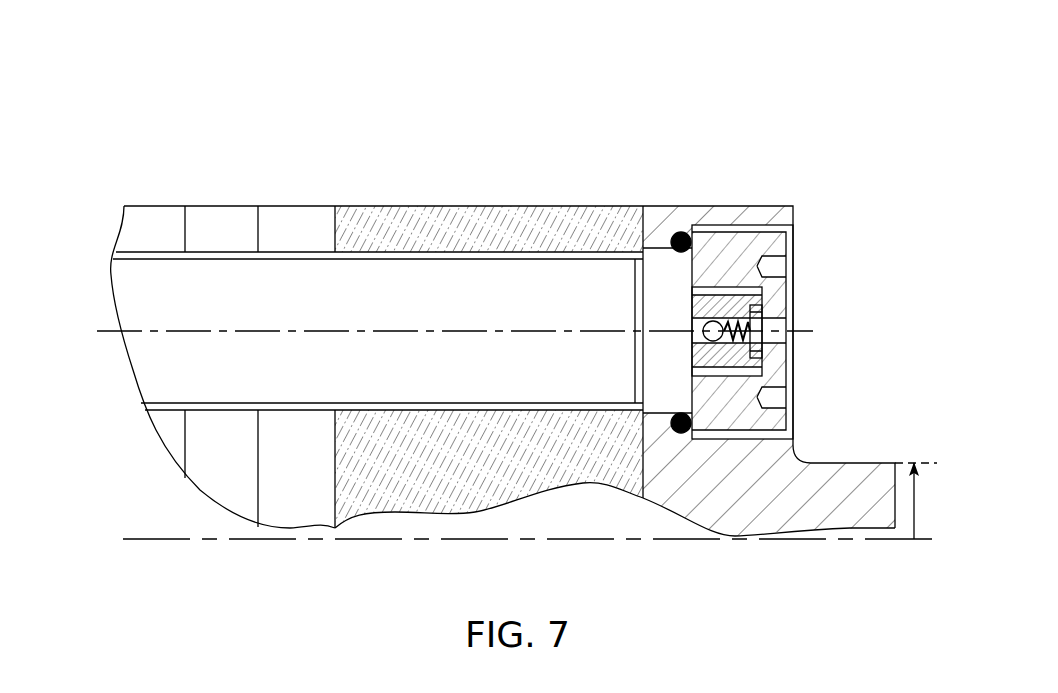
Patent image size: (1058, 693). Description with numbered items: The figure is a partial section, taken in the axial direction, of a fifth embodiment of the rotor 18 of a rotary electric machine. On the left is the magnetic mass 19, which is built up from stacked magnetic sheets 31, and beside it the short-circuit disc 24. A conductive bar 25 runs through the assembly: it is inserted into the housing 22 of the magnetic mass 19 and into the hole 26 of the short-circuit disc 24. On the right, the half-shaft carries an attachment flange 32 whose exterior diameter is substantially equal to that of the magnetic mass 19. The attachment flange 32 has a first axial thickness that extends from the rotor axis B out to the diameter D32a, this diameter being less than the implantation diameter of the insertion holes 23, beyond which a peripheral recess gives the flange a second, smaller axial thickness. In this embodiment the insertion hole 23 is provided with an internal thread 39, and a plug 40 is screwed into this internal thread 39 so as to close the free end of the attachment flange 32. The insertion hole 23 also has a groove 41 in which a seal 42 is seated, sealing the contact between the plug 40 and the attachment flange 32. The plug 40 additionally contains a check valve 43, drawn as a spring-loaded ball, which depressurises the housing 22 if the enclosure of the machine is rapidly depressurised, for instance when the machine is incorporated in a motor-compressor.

The rotor 18 is at (667, 117).
The magnetic mass 19 is at (331, 173).
The housing 22 is at (160, 252).
The insertion hole 23 is at (672, 377).
The short-circuit disc 24 is at (563, 207).
The conductive bar 25 is at (132, 306).
The hole 26 is at (471, 252).
The magnetic sheets 31 is at (231, 206).
The attachment flange 32 is at (739, 207).
The internal thread 39 is at (785, 225).
The plug 40 is at (774, 292).
The groove 41 is at (671, 240).
The seal 42 is at (684, 230).
The check valve 43 is at (756, 328).
The axis B is at (540, 538).
The diameter D32a is at (914, 525).